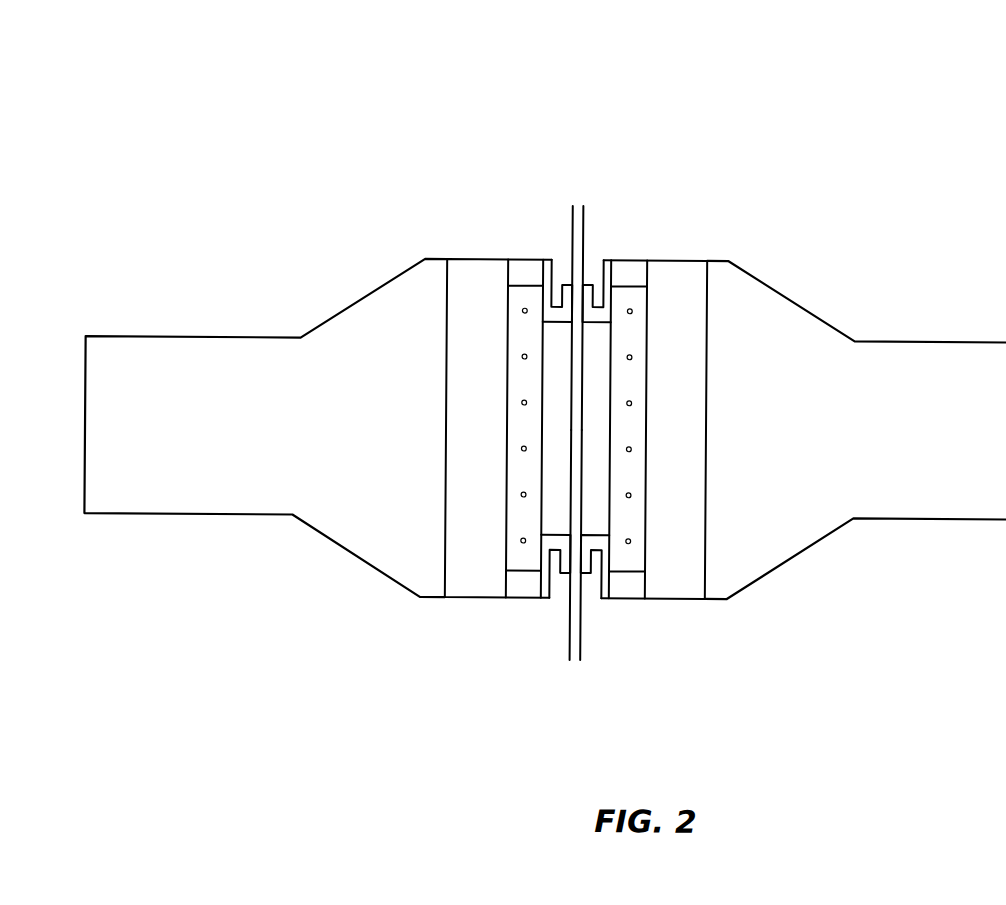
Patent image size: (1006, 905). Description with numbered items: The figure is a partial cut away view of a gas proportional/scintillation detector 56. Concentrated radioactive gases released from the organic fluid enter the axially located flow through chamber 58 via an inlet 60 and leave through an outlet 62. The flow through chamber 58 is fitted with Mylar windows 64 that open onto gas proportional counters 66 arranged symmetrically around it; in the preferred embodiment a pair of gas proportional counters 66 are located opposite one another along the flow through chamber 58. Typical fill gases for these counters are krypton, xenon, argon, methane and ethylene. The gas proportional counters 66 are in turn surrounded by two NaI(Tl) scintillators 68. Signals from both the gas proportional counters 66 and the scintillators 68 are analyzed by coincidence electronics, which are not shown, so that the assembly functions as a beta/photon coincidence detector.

The sensor assembly 56 is at (673, 139).
The flow through chamber 58 is at (569, 425).
The inlet 60 is at (570, 284).
The outlet 62 is at (582, 575).
The Mylar windows 64 is at (612, 467).
The gas proportional counters 66 is at (536, 296).
The NaI(Tl) scintillators 68 is at (475, 598).